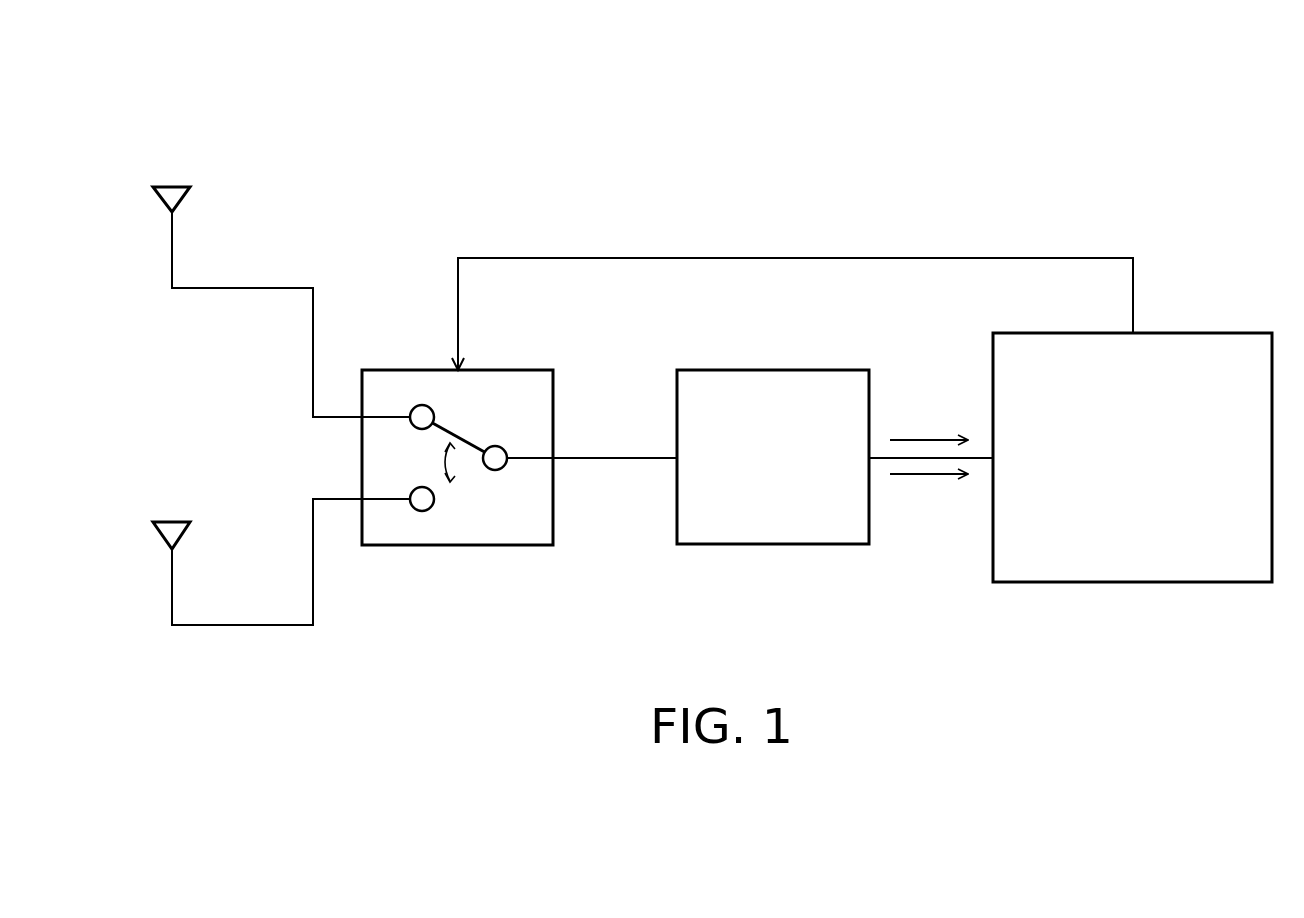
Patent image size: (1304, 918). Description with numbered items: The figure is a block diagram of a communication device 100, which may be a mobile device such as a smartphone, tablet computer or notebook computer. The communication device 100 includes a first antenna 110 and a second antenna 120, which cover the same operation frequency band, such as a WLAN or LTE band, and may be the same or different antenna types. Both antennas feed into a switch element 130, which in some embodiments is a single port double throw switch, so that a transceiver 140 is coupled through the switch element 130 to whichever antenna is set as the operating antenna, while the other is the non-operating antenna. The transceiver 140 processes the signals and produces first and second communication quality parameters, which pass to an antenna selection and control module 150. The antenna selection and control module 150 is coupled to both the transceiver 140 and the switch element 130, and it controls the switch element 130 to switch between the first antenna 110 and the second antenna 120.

The communication device 100 is at (123, 73).
The first antenna 110 is at (172, 187).
The second antenna 120 is at (172, 522).
The switch element 130 is at (362, 370).
The transceiver 140 is at (677, 370).
The antenna selection and control module 150 is at (993, 333).